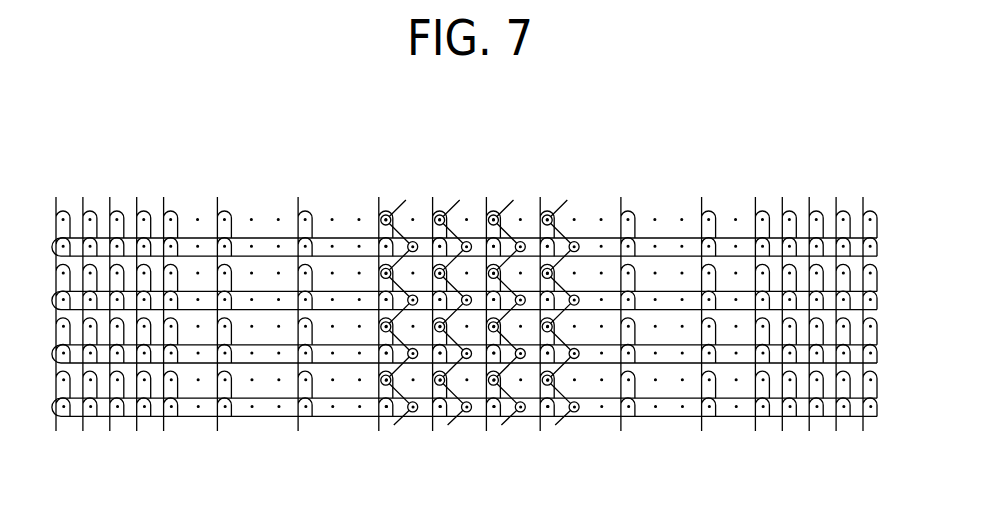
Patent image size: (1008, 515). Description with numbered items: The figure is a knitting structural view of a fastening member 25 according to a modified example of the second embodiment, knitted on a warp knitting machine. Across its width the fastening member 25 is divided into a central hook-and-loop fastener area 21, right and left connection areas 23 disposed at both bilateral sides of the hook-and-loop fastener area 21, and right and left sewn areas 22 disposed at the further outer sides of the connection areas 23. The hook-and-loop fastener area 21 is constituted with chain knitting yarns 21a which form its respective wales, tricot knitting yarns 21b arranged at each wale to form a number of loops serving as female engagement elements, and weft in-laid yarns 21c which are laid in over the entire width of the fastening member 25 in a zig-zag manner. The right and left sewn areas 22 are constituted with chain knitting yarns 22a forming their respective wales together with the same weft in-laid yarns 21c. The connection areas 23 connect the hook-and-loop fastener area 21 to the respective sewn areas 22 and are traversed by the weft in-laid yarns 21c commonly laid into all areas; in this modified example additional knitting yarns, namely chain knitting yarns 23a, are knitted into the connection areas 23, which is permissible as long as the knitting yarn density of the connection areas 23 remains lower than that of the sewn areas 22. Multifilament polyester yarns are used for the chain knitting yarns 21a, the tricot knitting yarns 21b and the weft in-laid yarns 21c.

The fastening member 25 is at (137, 133).
The hook-and-loop fastener area 21 is at (370, 448).
The sewn areas 22 is at (876, 448).
The connection areas 23 is at (747, 448).
The chain knitting yarns 21a is at (379, 253).
The tricot knitting yarns 21b is at (395, 236).
The weft in-laid yarns 21c is at (322, 233).
The chain knitting yarns 22a is at (172, 203).
The chain knitting yarns 23a is at (297, 205).